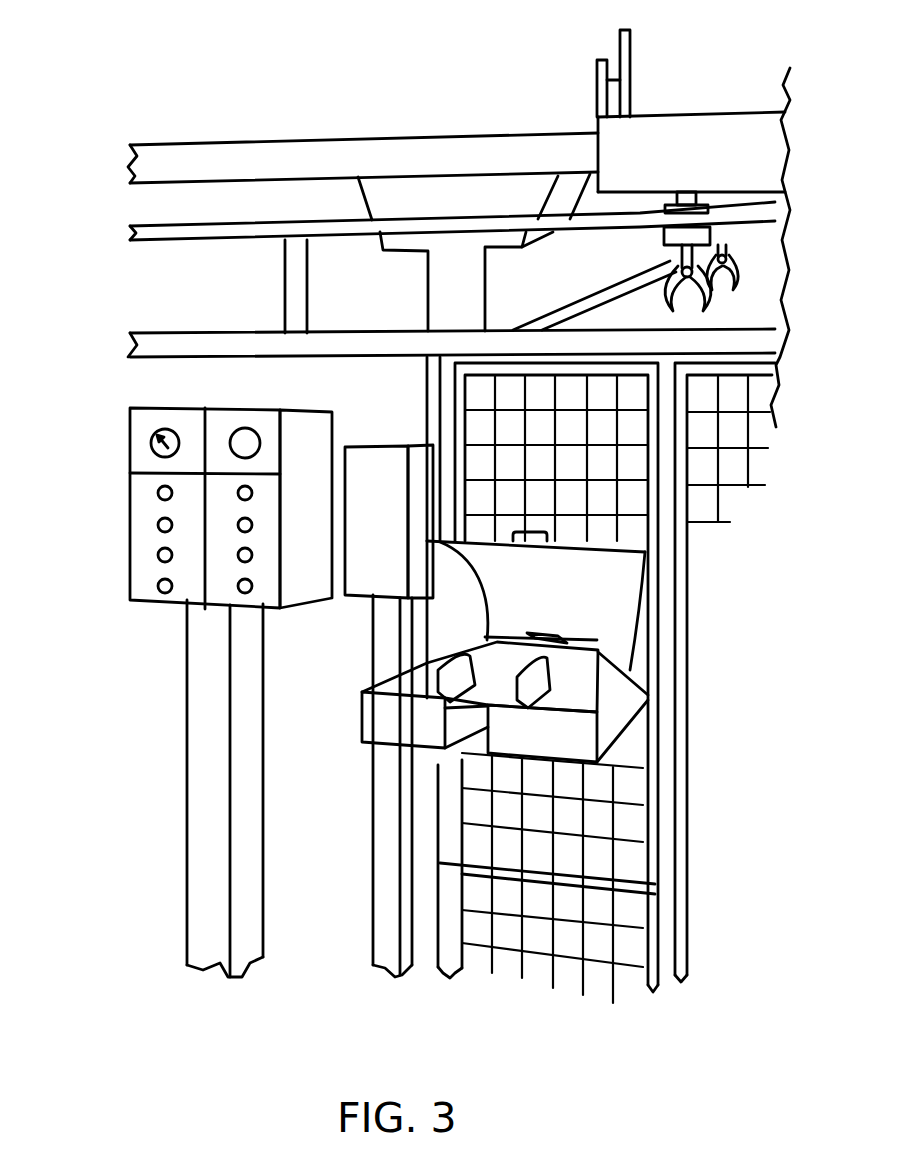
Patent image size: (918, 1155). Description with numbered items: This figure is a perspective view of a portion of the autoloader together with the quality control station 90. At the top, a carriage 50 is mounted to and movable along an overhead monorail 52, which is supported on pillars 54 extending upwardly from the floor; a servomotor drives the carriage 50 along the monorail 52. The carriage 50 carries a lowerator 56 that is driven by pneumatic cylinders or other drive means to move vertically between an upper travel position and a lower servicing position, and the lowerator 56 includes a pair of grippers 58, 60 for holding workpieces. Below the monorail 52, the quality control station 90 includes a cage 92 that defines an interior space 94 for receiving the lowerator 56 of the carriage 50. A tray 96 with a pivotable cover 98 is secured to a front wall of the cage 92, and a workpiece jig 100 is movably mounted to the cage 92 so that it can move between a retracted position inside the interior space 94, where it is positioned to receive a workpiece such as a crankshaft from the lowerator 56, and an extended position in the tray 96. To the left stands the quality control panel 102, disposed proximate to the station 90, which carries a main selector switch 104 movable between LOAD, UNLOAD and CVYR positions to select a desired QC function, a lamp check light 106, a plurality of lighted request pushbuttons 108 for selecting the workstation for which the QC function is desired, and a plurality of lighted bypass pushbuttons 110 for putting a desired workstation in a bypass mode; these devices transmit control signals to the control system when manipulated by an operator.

The carriage 50 is at (680, 133).
The overhead monorail 52 is at (177, 163).
The pillars 54 is at (450, 283).
The lowerator 56 is at (693, 230).
The gripper 58 is at (710, 307).
The gripper 60 is at (733, 263).
The quality control station 90 is at (317, 837).
The cage 92 is at (607, 490).
The interior space 94 is at (598, 318).
The tray 96 is at (563, 742).
The pivotable cover 98 is at (597, 585).
The workpiece jig 100 is at (530, 683).
The quality control panel 102 is at (146, 618).
The main selector switch 104 is at (150, 450).
The lamp check light 106 is at (245, 430).
The lighted request pushbuttons 108 is at (137, 543).
The lighted bypass pushbuttons 110 is at (265, 558).